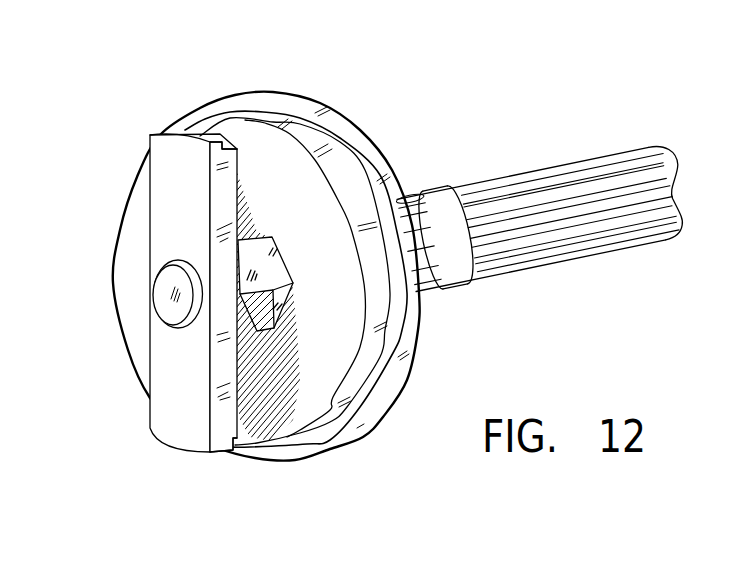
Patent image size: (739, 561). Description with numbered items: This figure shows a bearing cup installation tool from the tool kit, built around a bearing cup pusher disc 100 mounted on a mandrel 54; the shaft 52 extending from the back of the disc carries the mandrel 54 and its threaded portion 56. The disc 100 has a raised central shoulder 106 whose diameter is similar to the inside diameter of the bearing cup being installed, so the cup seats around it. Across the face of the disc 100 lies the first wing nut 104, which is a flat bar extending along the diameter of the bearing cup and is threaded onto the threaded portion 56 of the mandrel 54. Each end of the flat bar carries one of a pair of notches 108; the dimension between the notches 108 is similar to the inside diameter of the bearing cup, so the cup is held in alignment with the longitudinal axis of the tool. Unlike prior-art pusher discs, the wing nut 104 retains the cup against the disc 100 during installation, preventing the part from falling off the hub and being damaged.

The shaft 52 is at (542, 178).
The mandrel 54 is at (423, 194).
The threaded portion 56 is at (166, 311).
The bearing cup pusher disc 100 is at (302, 104).
The first wing nut 104 is at (165, 172).
The raised central shoulder 106 is at (310, 140).
The notches 108 is at (232, 146).